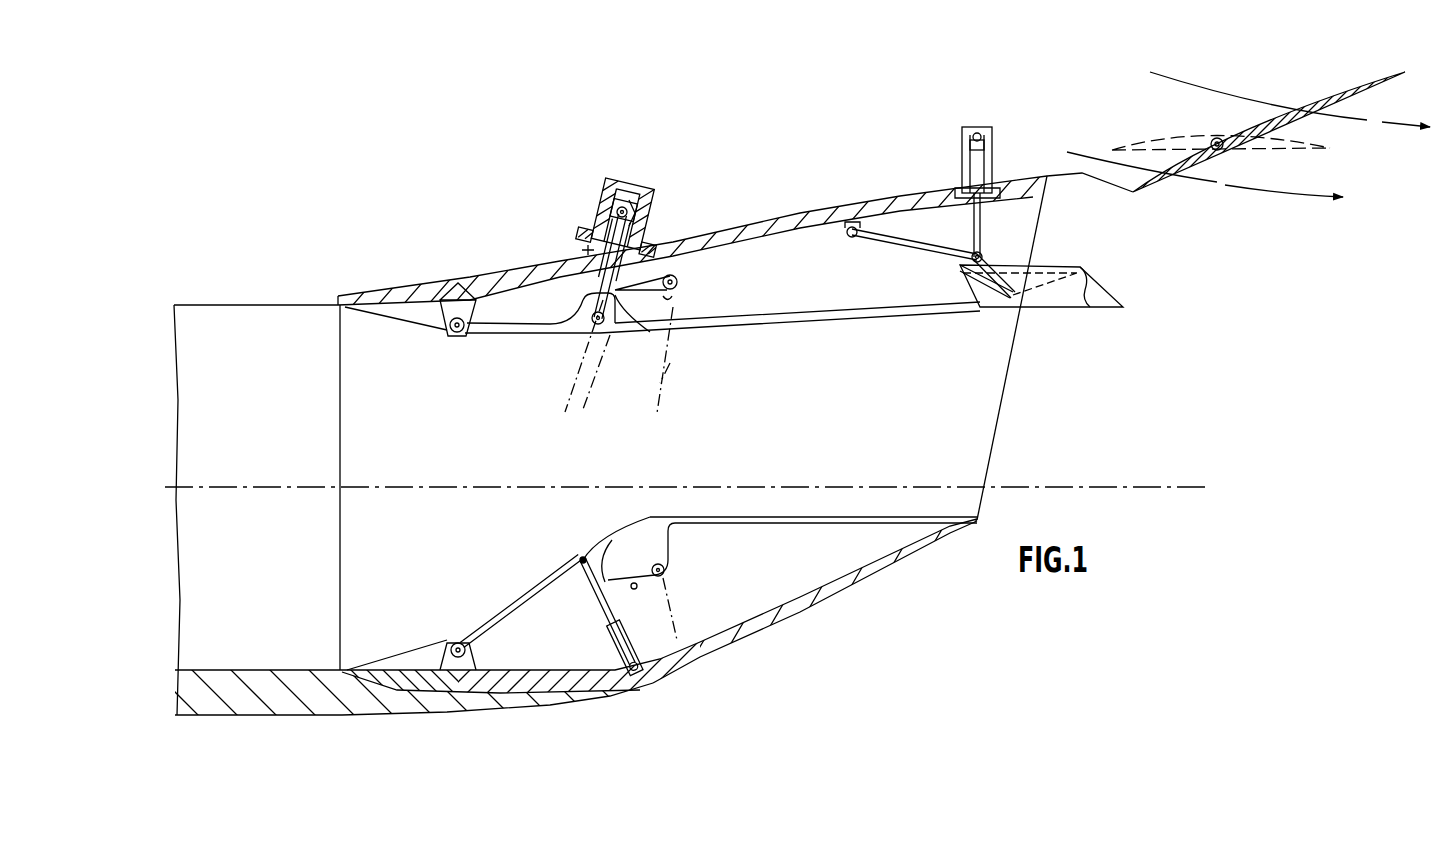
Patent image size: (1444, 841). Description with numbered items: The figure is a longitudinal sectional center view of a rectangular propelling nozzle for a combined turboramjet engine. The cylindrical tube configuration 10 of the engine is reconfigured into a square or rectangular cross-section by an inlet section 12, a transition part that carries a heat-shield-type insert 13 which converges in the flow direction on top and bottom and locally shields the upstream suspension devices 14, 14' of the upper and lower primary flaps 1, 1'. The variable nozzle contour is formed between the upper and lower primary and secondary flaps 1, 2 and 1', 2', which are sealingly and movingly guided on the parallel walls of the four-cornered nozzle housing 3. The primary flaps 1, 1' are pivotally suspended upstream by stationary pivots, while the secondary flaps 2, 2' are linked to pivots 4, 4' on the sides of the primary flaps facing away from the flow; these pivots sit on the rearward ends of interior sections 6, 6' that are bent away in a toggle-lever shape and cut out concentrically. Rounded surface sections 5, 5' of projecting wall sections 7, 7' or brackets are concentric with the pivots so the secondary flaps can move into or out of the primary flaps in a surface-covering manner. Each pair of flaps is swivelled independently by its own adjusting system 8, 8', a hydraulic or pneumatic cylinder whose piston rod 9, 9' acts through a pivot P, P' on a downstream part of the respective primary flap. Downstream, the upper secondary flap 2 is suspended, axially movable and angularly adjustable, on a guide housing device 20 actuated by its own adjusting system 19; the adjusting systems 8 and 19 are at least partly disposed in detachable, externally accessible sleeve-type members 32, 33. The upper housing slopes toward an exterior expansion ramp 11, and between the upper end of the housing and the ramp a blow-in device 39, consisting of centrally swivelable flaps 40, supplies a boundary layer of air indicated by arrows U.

The upper primary flap 1 is at (540, 343).
The upper secondary flap 2 is at (790, 343).
The nozzle housing 3 is at (765, 212).
The pivot 4 is at (681, 333).
The rounded surface section 5 is at (642, 331).
The interior section 6 is at (649, 210).
The projecting wall section 7 is at (687, 333).
The adjusting system 8 is at (614, 246).
The piston rod 9 is at (573, 231).
The cylindrical tube configuration 10 is at (272, 666).
The expansion ramp 11 is at (1361, 85).
The inlet section 12 is at (387, 668).
The heat-shield-type insert 13 is at (403, 312).
The upstream suspension device 14 is at (442, 281).
The adjusting system 19 is at (997, 149).
The guide housing device 20 is at (1105, 305).
The sleeve-type member 32 is at (620, 205).
The sleeve-type member 33 is at (966, 150).
The blow-in device 39 is at (1201, 123).
The flap 40 is at (1246, 150).
The pivot P is at (586, 356).
The arrows U is at (1422, 137).
The lower primary flap 1' is at (520, 592).
The lower secondary flap 2' is at (792, 509).
The pivot 4' is at (681, 610).
The rounded surface section 5' is at (633, 510).
The interior section 6' is at (642, 611).
The projecting wall section 7' is at (686, 582).
The adjusting system 8' is at (599, 677).
The piston rod 9' is at (586, 597).
The upstream suspension device 14' is at (436, 632).
The pivot P' is at (559, 542).